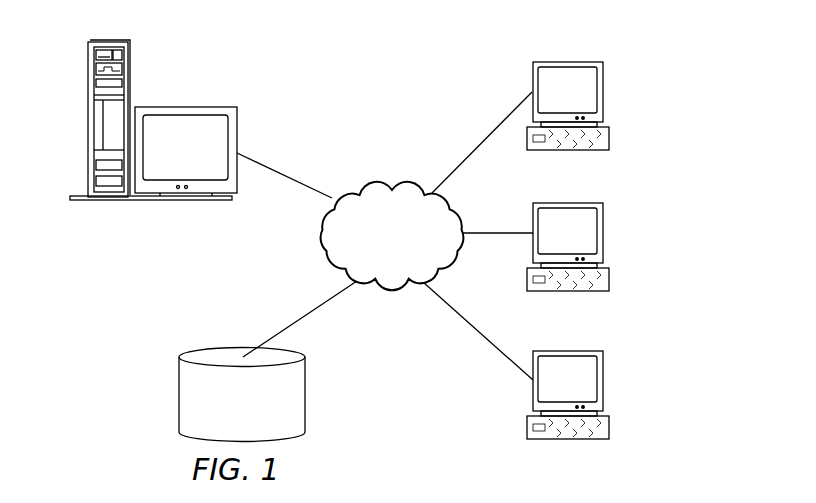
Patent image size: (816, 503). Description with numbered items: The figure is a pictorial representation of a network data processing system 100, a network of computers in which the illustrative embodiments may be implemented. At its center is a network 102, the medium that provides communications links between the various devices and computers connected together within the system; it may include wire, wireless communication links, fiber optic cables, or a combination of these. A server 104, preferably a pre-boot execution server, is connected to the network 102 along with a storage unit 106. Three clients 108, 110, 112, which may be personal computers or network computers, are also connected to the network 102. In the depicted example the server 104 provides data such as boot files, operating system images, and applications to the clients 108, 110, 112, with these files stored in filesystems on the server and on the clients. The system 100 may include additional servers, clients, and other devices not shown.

The network data processing system 100 is at (437, 75).
The network 102 is at (362, 188).
The server 104 is at (88, 123).
The storage unit 106 is at (179, 400).
The client 108 is at (604, 92).
The client 110 is at (604, 233).
The client 112 is at (604, 383).